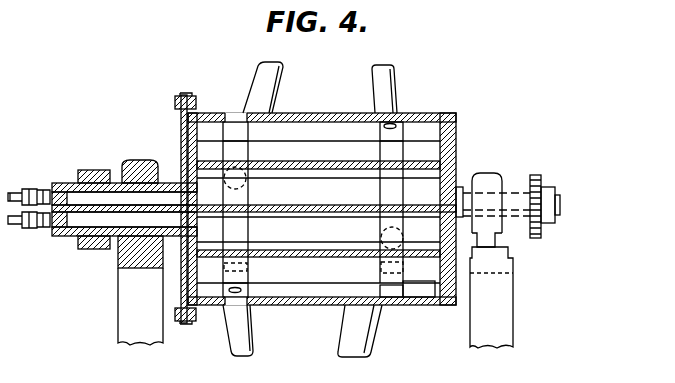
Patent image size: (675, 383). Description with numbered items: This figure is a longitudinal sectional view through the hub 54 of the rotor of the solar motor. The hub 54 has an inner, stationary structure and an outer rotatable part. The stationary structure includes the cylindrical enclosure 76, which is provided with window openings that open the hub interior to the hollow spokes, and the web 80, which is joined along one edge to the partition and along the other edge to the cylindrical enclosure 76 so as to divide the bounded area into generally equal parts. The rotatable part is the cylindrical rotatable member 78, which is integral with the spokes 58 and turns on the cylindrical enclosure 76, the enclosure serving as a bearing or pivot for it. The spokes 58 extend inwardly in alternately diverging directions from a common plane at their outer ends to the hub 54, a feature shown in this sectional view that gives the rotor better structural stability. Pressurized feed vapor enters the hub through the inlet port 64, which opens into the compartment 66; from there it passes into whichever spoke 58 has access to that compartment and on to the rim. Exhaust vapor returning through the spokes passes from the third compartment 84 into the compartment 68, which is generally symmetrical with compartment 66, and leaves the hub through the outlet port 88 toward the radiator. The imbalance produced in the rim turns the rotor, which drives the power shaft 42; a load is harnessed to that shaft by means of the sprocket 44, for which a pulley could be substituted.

The power shaft 42 is at (515, 197).
The sprocket 44 is at (533, 240).
The hub 54 is at (434, 107).
The spokes 58 is at (373, 80).
The inlet port 64 is at (82, 217).
The compartment 66 is at (330, 240).
The compartment 68 is at (330, 199).
The cylindrical enclosure 76 is at (206, 113).
The cylindrical rotatable member 78 is at (233, 113).
The web 80 is at (417, 202).
The third compartment 84 is at (327, 308).
The outlet port 88 is at (77, 193).